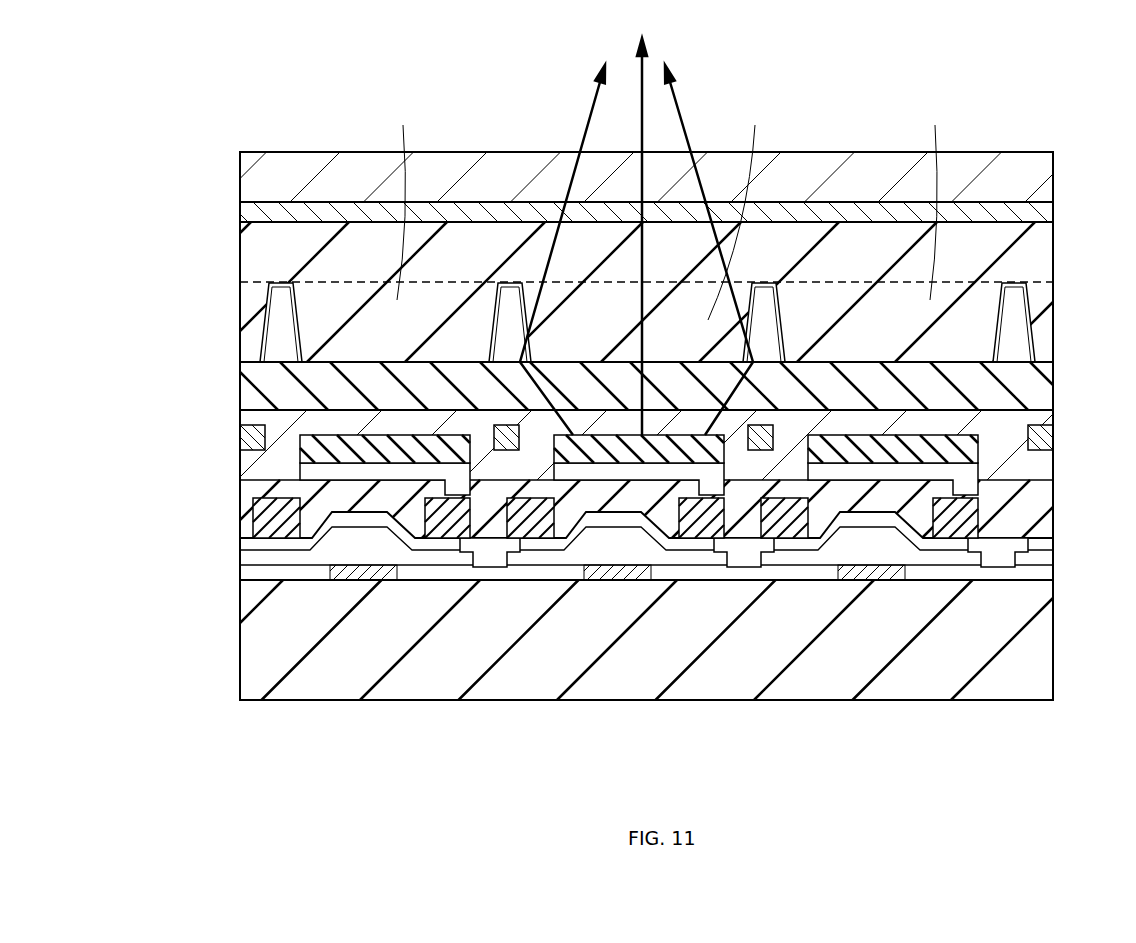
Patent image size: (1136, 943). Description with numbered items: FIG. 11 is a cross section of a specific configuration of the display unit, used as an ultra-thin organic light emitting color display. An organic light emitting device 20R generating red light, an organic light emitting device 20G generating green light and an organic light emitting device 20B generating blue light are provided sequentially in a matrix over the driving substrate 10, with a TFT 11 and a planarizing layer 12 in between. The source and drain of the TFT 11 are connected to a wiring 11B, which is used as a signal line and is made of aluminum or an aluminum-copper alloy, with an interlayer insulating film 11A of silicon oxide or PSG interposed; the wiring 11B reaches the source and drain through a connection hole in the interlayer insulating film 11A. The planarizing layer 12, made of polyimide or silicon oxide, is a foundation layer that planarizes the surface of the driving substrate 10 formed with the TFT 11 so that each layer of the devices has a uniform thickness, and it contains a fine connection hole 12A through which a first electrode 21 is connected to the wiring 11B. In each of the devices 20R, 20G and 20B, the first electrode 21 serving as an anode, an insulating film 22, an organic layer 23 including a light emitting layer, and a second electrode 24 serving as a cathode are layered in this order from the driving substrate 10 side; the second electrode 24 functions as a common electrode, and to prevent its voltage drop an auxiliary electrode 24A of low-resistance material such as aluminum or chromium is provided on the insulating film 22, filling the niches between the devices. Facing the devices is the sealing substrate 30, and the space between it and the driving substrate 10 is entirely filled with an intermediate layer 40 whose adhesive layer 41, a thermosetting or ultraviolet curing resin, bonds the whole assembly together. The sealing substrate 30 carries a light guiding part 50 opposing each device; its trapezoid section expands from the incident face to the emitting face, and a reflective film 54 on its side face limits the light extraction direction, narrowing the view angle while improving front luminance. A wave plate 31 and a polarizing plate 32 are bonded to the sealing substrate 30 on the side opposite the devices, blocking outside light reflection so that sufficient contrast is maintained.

The driving substrate 10 is at (1045, 622).
The TFT 11 is at (338, 557).
The interlayer insulating film 11A is at (1000, 558).
The wiring 11B is at (967, 522).
The planarizing layer 12 is at (1045, 506).
The connection hole 12A is at (1040, 482).
The organic light emitting device 20R is at (412, 487).
The organic light emitting device 20G is at (670, 487).
The organic light emitting device 20B is at (927, 487).
The first electrode 21 is at (310, 470).
The insulating film 22 is at (1048, 456).
The organic layer 23 is at (305, 446).
The second electrode 24 is at (250, 412).
The auxiliary electrode 24A is at (1048, 430).
The sealing substrate 30 is at (1050, 258).
The wave plate 31 is at (1050, 210).
The polarizing plate 32 is at (1050, 178).
The intermediate layer 40 is at (236, 362).
The adhesive layer 41 is at (250, 385).
The light guiding part 50 is at (667, 210).
The reflective film 54 is at (1025, 318).